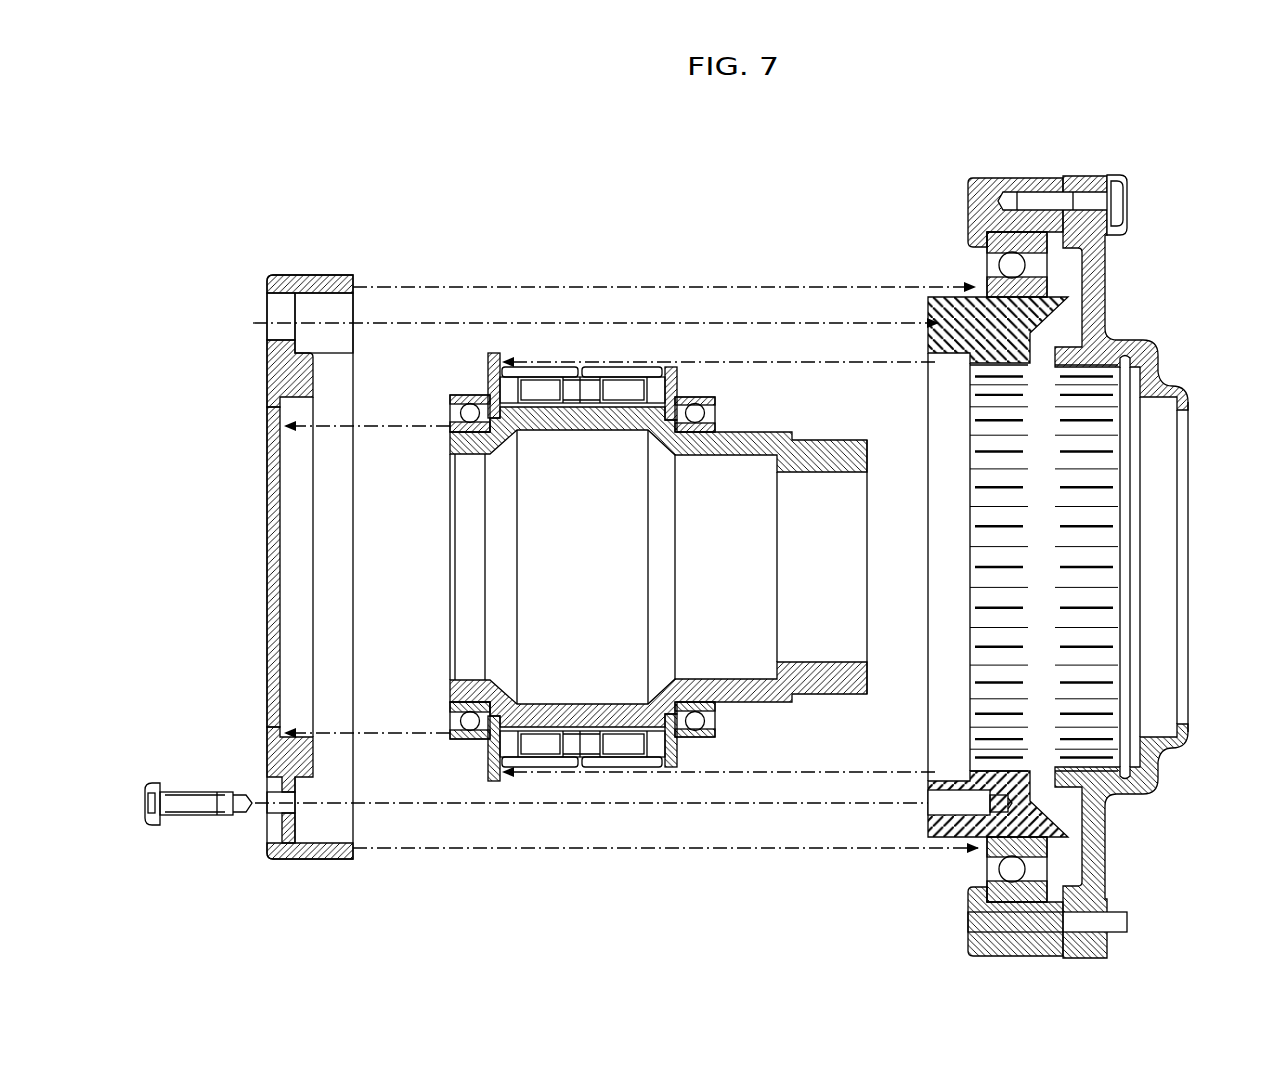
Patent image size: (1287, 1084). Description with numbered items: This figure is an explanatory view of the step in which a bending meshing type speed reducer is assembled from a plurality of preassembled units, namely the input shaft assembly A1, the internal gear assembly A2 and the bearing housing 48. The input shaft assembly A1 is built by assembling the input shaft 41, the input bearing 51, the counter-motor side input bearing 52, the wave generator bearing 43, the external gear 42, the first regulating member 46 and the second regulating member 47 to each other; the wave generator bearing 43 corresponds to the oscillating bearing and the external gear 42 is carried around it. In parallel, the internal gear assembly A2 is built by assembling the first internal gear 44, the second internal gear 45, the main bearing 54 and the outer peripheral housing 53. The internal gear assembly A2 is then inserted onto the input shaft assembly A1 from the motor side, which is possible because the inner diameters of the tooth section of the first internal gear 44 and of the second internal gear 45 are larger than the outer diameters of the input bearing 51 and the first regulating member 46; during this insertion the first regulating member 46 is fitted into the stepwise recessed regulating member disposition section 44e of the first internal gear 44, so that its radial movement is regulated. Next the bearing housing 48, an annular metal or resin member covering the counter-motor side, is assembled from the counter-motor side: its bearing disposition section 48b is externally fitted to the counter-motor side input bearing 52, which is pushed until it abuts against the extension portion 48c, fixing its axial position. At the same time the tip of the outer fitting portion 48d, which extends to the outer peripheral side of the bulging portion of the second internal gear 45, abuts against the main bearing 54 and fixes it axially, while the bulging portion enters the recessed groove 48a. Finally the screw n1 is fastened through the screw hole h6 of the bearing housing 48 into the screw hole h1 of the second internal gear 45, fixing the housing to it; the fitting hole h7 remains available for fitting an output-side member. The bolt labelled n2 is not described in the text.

The bearing housing 48 is at (281, 521).
The recessed groove 48a is at (307, 314).
The bearing disposition section 48b is at (288, 488).
The extension portion 48c is at (270, 403).
The outer fitting portion 48d is at (357, 282).
The fitting hole h7 is at (276, 313).
The screw hole h6 is at (290, 811).
The screw n1 is at (193, 789).
The input shaft assembly A1 is at (631, 495).
The input shaft 41 is at (822, 438).
The external gear 42 is at (545, 372).
The wave generator bearing 43 is at (623, 399).
The first regulating member 46 is at (678, 387).
The second regulating member 47 is at (487, 367).
The input bearing 51 is at (716, 406).
The counter-motor side input bearing 52 is at (452, 401).
The internal gear assembly A2 is at (1067, 522).
The first internal gear 44 is at (1152, 345).
The regulating member disposition section 44e is at (1140, 580).
The second internal gear 45 is at (971, 562).
The outer peripheral housing 53 is at (970, 186).
The main bearing 54 is at (1010, 265).
The bolt n2 is at (1120, 198).
The screw hole h1 is at (935, 804).